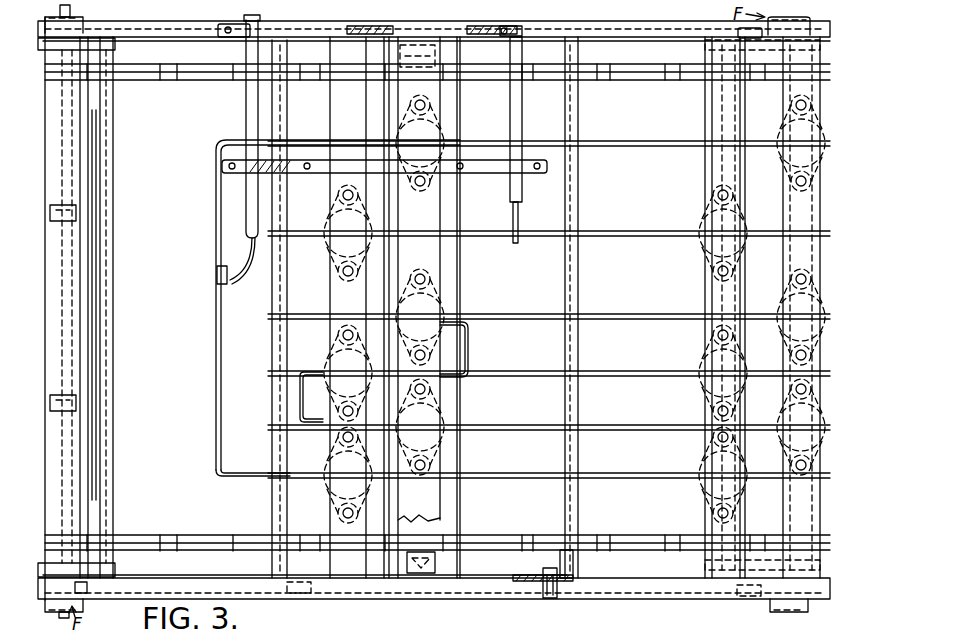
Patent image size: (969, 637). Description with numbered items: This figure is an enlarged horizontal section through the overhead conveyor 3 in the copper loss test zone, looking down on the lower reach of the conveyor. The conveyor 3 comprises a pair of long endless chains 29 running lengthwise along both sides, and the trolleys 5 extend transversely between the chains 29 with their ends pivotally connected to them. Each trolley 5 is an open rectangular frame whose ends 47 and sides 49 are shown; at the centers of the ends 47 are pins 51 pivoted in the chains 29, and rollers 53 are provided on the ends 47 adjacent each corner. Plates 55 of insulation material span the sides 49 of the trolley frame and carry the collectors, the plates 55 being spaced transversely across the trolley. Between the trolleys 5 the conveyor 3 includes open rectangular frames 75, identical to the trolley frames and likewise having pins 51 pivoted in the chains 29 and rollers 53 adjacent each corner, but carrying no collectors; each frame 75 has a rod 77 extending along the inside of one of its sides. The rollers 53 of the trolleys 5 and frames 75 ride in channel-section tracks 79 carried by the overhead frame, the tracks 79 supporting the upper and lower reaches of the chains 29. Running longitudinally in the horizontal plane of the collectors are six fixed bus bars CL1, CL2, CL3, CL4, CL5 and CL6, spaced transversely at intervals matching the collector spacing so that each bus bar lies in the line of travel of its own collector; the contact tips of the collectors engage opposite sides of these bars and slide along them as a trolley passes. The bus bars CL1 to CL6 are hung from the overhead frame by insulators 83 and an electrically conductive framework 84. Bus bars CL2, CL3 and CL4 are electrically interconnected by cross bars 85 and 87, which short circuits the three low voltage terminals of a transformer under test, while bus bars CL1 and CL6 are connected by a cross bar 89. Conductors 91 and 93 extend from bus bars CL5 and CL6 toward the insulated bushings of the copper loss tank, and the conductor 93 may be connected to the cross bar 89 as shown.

The conveyor 3 is at (155, 530).
The trolleys 5 is at (268, 512).
The endless chains 29 is at (172, 76).
The ends of trolley frame 47 is at (485, 50).
The sides of trolley frame 49 is at (273, 297).
The pins 51 is at (427, 67).
The rollers 53 is at (103, 33).
The plates of insulation material 55 is at (549, 308).
The open rectangular frames 75 is at (117, 277).
The rod 77 is at (92, 313).
The channel-section tracks 79 is at (180, 28).
The insulators 83 is at (435, 137).
The electrically conductive framework 84 is at (217, 238).
The cross bar 85 is at (297, 400).
The cross bar 87 is at (470, 347).
The cross bar 89 is at (217, 337).
The conductor 91 is at (518, 215).
The conductor 93 is at (247, 260).
The bus bar CL1 is at (594, 482).
The bus bar CL2 is at (596, 431).
The bus bar CL3 is at (596, 382).
The bus bar CL4 is at (603, 324).
The bus bar CL5 is at (606, 242).
The bus bar CL6 is at (600, 152).